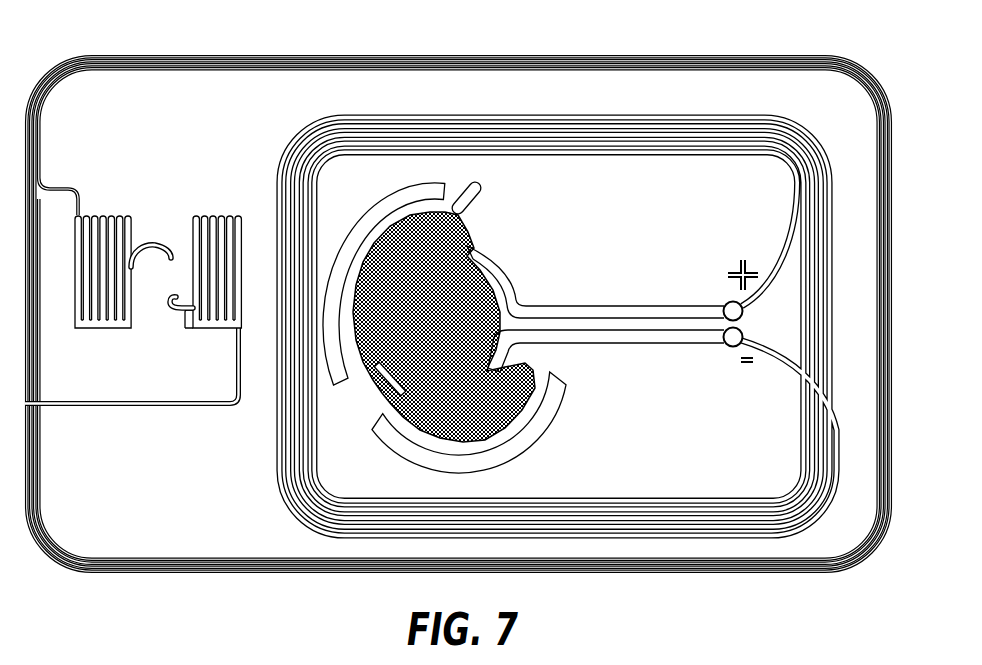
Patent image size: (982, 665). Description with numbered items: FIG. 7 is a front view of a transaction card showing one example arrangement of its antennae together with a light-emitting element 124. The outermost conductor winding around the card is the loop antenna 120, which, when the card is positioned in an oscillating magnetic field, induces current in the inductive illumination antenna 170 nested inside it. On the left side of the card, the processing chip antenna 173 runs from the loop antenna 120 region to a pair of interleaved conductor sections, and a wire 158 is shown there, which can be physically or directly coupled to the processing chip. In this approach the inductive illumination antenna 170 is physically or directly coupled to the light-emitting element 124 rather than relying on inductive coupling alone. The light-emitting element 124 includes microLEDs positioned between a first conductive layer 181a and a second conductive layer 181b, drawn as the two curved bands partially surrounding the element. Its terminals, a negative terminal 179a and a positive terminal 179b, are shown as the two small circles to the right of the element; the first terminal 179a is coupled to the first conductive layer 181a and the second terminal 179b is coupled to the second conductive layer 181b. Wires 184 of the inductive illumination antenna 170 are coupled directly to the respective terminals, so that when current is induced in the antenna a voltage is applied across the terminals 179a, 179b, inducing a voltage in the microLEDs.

The loop antenna 120 is at (507, 56).
The inductive illumination antenna 170 is at (557, 116).
The processing chip antenna 173 is at (150, 407).
The wire 158 is at (163, 296).
The light-emitting element 124 is at (479, 187).
The first conductive layer 181a is at (441, 198).
The second conductive layer 181b is at (527, 445).
The negative terminal 179a is at (734, 348).
The positive terminal 179b is at (734, 300).
The wires 184 is at (772, 314).